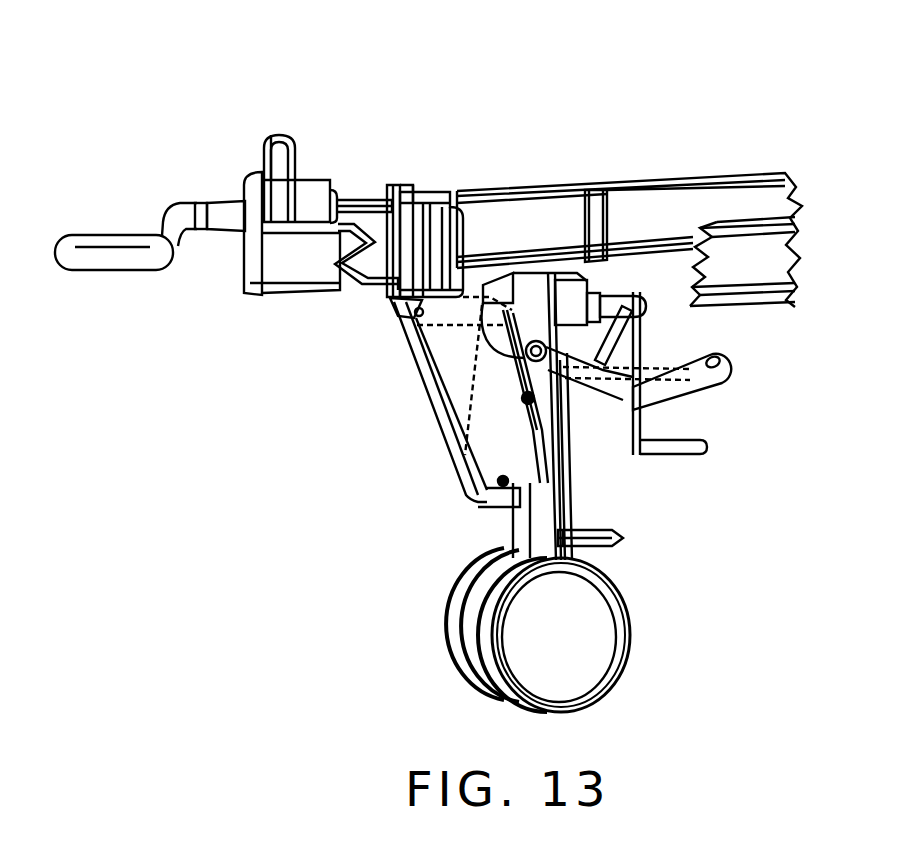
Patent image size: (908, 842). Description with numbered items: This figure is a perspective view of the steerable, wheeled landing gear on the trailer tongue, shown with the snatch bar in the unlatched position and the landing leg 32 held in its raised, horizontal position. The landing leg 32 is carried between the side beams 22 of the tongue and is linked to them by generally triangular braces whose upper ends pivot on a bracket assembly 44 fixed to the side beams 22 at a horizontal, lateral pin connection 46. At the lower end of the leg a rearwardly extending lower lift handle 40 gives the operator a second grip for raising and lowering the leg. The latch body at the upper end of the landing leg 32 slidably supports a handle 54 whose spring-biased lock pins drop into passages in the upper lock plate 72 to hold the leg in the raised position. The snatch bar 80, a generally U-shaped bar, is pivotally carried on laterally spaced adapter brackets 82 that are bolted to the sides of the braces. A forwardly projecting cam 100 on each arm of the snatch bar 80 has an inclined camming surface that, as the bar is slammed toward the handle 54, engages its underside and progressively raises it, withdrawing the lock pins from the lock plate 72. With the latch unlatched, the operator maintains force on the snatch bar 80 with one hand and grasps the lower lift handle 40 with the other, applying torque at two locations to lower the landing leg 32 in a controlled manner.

The side beams 22 is at (513, 207).
The upper lock plate 72 is at (405, 185).
The bracket assembly 44 is at (405, 243).
The pin connection 46 is at (395, 320).
The adapter brackets 82 is at (510, 443).
The landing leg 32 is at (548, 465).
The handle 54 is at (646, 308).
The cam 100 is at (628, 347).
The snatch bar 80 is at (717, 383).
The lower lift handle 40 is at (623, 538).